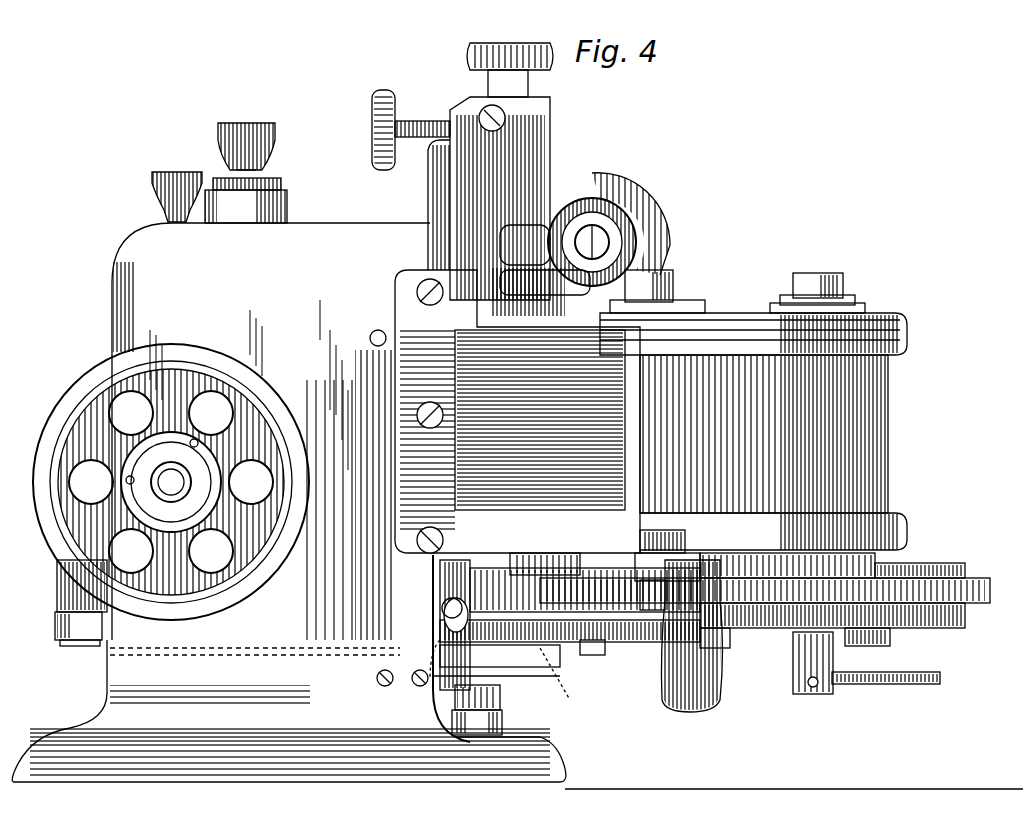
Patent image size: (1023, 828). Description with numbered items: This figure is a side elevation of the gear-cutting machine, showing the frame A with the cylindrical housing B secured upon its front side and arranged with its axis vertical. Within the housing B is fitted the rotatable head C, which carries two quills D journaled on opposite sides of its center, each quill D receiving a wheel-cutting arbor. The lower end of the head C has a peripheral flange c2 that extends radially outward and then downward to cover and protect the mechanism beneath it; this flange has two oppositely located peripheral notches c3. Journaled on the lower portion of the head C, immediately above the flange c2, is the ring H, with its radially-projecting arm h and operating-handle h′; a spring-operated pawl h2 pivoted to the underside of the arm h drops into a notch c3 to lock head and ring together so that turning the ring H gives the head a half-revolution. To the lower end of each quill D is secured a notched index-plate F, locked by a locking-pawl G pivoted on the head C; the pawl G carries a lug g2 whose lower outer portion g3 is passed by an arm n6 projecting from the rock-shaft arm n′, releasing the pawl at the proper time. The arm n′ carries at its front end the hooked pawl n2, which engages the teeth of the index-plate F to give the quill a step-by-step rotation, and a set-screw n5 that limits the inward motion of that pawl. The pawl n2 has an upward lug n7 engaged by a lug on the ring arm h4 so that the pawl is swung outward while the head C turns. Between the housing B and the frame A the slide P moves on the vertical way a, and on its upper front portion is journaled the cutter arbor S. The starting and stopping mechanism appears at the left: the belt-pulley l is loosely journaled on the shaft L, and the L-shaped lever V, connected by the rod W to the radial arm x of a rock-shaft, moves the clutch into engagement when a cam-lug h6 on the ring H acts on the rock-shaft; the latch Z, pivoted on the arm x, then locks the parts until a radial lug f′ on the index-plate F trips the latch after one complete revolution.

The frame A is at (289, 452).
The belt-pulley l is at (168, 482).
The horizontally-journaled shaft L is at (151, 482).
The L-shaped lever V is at (72, 606).
The rod W is at (98, 650).
The slide P is at (511, 179).
The vertical way a is at (411, 180).
The arbor S is at (582, 225).
The quill D is at (738, 285).
The head C is at (753, 321).
The cylindrical housing B is at (777, 452).
The lug n7 is at (505, 411).
The peripheral flange c2 is at (970, 593).
The cam-lug h6 is at (920, 562).
The ring H is at (762, 560).
The radially-projecting arm h is at (670, 555).
The spring-operated pawl h2 is at (585, 590).
The peripheral notch c3 is at (566, 640).
The arm h4 is at (545, 548).
The locking-pawl G is at (675, 641).
The index-plate F is at (758, 640).
The radial lug f′ is at (740, 687).
The lug g2 is at (880, 637).
The lower outer portion g3 is at (725, 640).
The operating-handle h′ is at (692, 642).
The arm n6 is at (585, 658).
The pawl n2 is at (530, 660).
The second arm n′ is at (510, 665).
The set-screw n5 is at (428, 608).
The radial arm x is at (429, 635).
The latch Z is at (432, 680).